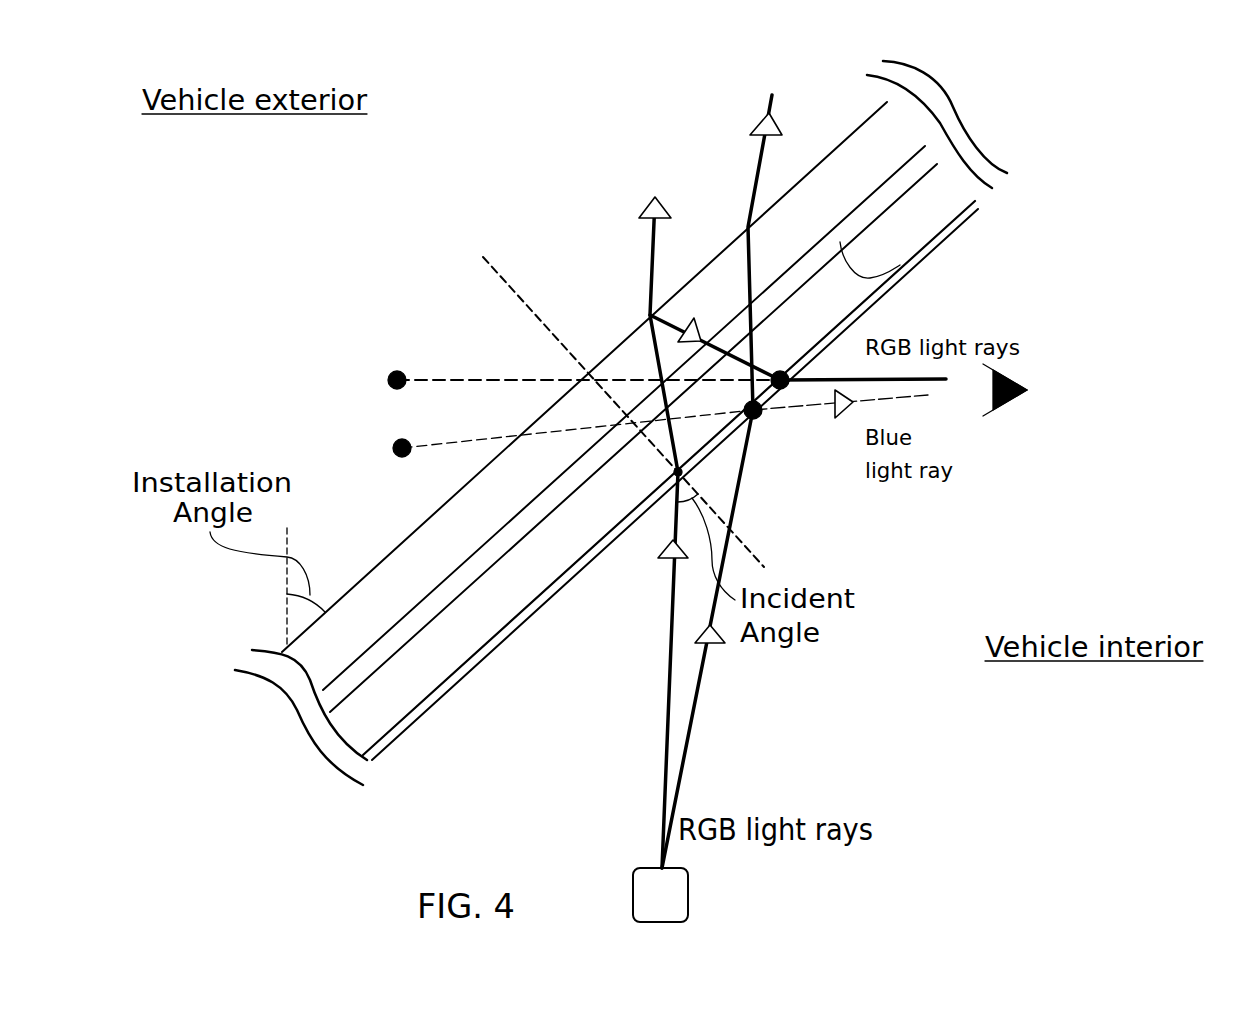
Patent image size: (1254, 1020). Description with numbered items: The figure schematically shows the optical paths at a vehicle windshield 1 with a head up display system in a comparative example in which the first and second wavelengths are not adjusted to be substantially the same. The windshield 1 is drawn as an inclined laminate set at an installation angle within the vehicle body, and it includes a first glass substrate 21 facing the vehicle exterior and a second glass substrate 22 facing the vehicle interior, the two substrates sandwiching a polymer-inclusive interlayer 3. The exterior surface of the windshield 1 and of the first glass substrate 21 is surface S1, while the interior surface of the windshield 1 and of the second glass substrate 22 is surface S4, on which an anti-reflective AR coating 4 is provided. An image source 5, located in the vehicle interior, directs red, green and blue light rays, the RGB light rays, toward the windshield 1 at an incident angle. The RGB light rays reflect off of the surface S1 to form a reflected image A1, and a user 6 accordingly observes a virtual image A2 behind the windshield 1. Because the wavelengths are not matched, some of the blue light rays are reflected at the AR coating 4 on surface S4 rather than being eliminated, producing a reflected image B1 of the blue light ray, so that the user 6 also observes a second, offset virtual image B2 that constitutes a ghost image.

The vehicle windshield 1 is at (577, 203).
The polymer-inclusive interlayer 3 is at (927, 246).
The AR coating 4 is at (977, 204).
The image source 5 is at (669, 914).
The user 6 is at (1013, 375).
The first glass substrate 21 is at (457, 525).
The second glass substrate 22 is at (412, 675).
The exterior surface of the windshield S1 is at (838, 147).
The interior surface of the windshield S4 is at (500, 632).
The reflected image A1 is at (780, 362).
The virtual image A2 is at (571, 361).
The reflected image B1 is at (768, 432).
The virtual image B2 is at (557, 454).